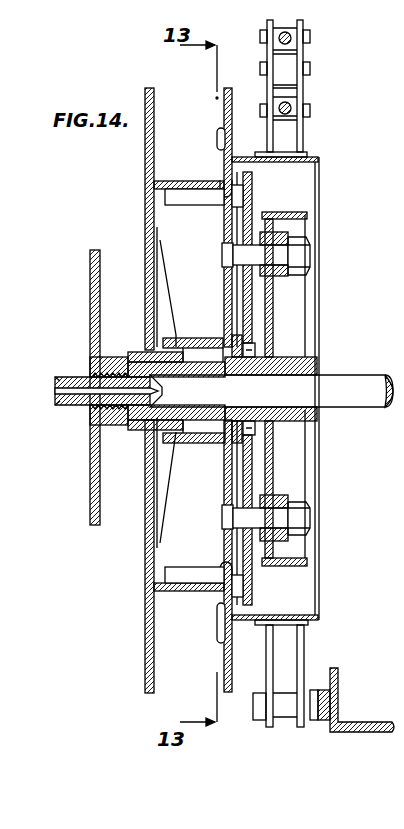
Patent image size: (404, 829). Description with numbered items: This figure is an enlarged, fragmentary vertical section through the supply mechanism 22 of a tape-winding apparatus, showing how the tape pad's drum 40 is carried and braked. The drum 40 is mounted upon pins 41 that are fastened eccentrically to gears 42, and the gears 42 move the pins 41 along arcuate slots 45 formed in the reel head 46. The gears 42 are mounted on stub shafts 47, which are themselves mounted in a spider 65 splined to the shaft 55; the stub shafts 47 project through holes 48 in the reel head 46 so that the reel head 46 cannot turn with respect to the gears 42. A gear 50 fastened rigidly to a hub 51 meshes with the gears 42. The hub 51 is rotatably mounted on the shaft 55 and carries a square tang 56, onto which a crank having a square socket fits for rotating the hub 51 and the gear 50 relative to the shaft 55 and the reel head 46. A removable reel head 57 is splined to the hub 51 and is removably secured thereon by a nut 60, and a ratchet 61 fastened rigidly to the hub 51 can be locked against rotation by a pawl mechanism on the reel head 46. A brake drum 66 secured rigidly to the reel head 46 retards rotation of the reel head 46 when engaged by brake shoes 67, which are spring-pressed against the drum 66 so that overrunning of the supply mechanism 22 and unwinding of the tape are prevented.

The supply mechanism 22 is at (134, 560).
The drum 40 is at (150, 598).
The pins 41 is at (180, 202).
The gears 42 is at (252, 200).
The arcuate slots 45 is at (232, 190).
The reel head 46 is at (223, 116).
The stub shafts 47 is at (248, 262).
The holes 48 is at (226, 254).
The gear 50 is at (260, 348).
The hub 51 is at (203, 365).
The shaft 55 is at (368, 383).
The square tang 56 is at (70, 407).
The removable reel head 57 is at (147, 105).
The nut 60 is at (118, 357).
The ratchet 61 is at (228, 448).
The spider 65 is at (307, 230).
The brake drum 66 is at (315, 157).
The brake shoes 67 is at (302, 98).